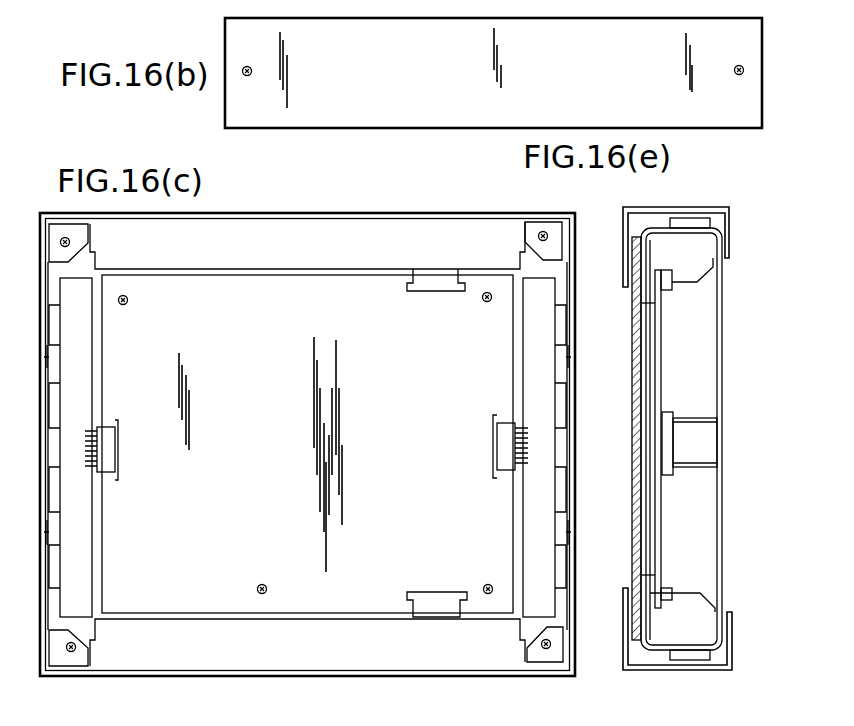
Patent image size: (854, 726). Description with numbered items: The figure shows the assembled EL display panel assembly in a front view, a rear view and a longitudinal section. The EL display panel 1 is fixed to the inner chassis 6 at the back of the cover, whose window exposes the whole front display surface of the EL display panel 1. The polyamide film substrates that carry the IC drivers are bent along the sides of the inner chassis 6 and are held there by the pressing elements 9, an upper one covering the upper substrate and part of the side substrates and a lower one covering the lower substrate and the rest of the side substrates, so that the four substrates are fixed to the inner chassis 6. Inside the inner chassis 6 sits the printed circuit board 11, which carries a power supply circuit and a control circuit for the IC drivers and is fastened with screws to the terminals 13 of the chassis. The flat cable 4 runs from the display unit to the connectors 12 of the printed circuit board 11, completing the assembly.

In FIG. 16c, the EL display panel 1 is at (307, 444).
The EL display panel 1 is at (634, 535).
In FIG. 16c, the printed circuit board 11 is at (190, 593).
The printed circuit board 11 is at (661, 341).
In FIG. 16c, the terminals 13 is at (130, 301).
In FIG. 16c, the connectors 12 is at (118, 435).
The connectors 12 is at (667, 470).
In FIG. 16c, the flat cable 4 is at (108, 477).
The flat cable 4 is at (702, 432).
The pressing elements 9 is at (728, 228).
The inner chassis 6 is at (648, 504).